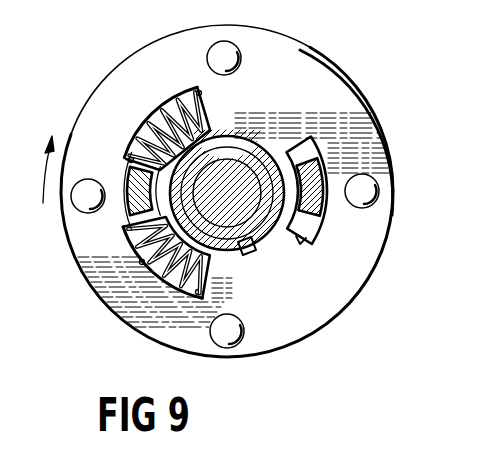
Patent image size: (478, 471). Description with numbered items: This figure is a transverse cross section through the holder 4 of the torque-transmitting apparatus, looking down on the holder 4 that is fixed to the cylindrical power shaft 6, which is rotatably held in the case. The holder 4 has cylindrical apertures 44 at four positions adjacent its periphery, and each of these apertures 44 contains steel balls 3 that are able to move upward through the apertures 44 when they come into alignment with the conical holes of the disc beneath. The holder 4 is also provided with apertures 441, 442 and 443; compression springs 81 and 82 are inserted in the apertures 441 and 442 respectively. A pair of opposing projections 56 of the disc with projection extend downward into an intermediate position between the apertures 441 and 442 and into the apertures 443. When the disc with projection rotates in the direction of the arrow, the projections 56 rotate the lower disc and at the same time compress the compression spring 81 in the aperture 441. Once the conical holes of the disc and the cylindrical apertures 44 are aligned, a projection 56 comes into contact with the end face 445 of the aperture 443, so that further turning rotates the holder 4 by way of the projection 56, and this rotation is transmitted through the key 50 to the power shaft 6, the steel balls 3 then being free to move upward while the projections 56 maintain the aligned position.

The steel balls 3 is at (364, 186).
The holder 4 is at (342, 93).
The power shaft 6 is at (243, 153).
The cylindrical apertures 44 is at (388, 228).
The key 50 is at (257, 248).
The projections 56 is at (137, 197).
The compression spring 81 is at (131, 140).
The compression spring 82 is at (175, 276).
The aperture 441 is at (167, 105).
The aperture 442 is at (142, 262).
The apertures 443 is at (304, 152).
The end face 445 is at (300, 242).